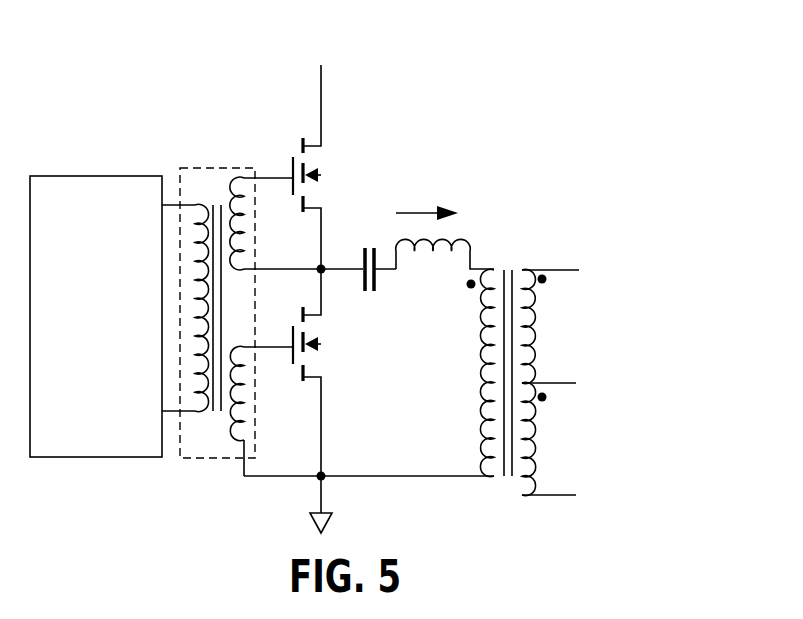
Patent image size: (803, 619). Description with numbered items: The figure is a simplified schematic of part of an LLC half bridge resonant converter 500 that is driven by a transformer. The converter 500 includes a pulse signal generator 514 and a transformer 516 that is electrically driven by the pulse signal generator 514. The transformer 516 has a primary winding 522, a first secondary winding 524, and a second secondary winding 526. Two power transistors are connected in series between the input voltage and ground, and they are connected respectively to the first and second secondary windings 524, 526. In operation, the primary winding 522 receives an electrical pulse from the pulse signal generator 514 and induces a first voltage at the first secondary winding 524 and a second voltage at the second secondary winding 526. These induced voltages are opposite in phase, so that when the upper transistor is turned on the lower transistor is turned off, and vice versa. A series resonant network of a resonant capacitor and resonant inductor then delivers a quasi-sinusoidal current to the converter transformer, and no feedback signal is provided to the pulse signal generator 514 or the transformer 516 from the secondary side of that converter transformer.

The LLC half bridge resonant converter 500 is at (542, 54).
The pulse signal generator 514 is at (112, 316).
The transformer 516 is at (208, 182).
The primary winding 522 is at (196, 393).
The first secondary winding 524 is at (275, 223).
The second secondary winding 526 is at (261, 411).